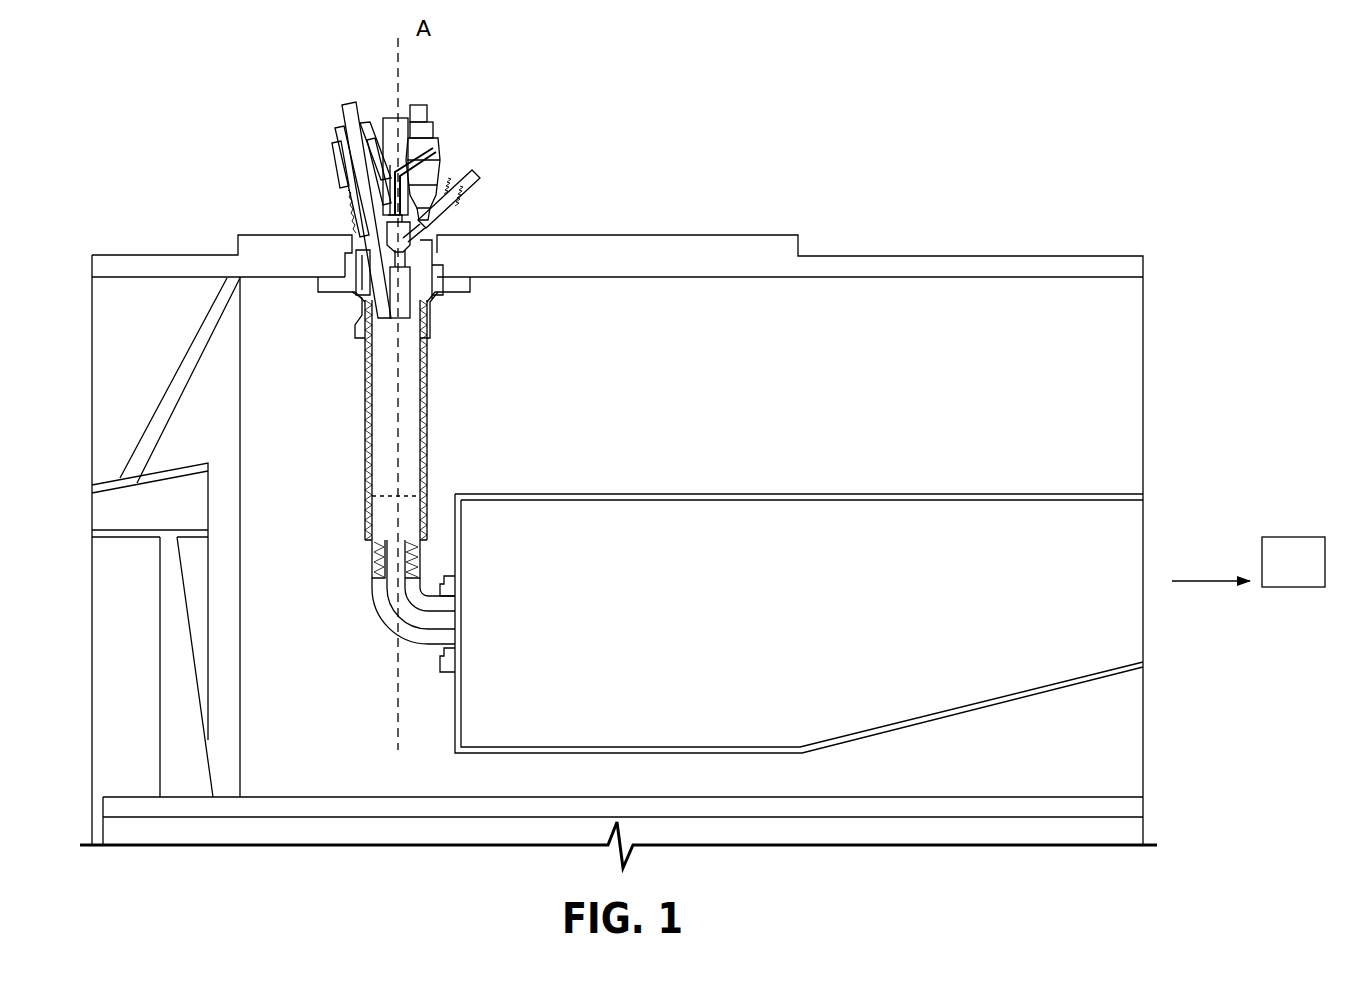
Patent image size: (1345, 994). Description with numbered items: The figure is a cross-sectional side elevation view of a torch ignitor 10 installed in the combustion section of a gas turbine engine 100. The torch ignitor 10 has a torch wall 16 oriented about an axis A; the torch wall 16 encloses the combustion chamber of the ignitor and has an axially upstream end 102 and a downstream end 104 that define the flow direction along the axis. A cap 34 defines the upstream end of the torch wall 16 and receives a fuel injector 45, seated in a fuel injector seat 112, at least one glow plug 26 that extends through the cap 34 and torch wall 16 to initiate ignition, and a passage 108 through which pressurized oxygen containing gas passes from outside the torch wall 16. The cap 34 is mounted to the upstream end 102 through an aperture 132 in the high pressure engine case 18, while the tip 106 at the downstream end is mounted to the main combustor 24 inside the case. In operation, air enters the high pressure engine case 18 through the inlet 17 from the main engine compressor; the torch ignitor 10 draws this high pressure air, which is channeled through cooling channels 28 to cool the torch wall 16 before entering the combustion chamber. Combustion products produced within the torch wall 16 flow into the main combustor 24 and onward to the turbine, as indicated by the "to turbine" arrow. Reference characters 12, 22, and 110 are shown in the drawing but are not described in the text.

The torch ignitor 10 is at (394, 200).
The fuel injector bars 12 is at (306, 166).
The torch wall 16 is at (380, 390).
The inlet 17 is at (160, 520).
The high pressure engine case 18 is at (680, 276).
The combustion liner 22 is at (932, 494).
The main combustor 24 is at (756, 652).
The glow plug 26 is at (432, 314).
The cooling channels 28 is at (365, 432).
The cap 34 is at (345, 212).
The fuel injector 45 is at (466, 190).
The gas turbine engine 100 is at (1314, 574).
The upstream end 102 is at (355, 310).
The downstream end 104 is at (365, 556).
The tip 106 is at (442, 648).
The passage for pressurized oxygen containing gas 108 is at (432, 156).
The compressor discharge region 110 is at (688, 88).
The fuel injector seat 112 is at (420, 230).
The aperture 132 is at (353, 262).